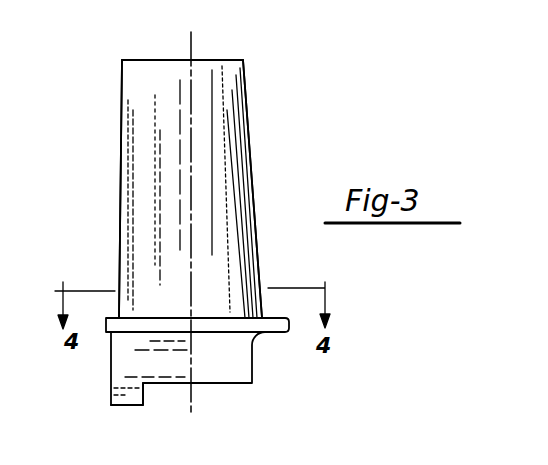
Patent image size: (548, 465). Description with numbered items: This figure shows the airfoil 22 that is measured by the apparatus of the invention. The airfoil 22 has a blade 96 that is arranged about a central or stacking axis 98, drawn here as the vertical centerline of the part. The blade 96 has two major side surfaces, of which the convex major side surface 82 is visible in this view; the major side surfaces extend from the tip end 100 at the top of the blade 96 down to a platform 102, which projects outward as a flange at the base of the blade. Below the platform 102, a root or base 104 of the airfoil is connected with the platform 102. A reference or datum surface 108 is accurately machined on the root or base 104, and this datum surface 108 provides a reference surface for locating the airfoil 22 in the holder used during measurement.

The airfoil 22 is at (250, 80).
The convex major side surface 82 is at (145, 181).
The blade 96 is at (240, 137).
The central or stacking axis 98 is at (188, 44).
The tip end 100 is at (126, 60).
The platform 102 is at (287, 334).
The root or base 104 is at (113, 386).
The reference or datum surface 108 is at (111, 360).